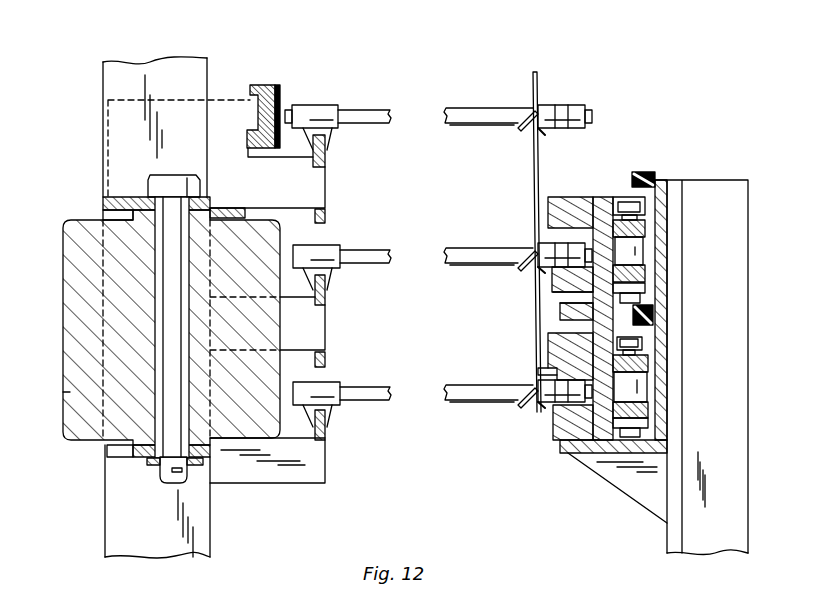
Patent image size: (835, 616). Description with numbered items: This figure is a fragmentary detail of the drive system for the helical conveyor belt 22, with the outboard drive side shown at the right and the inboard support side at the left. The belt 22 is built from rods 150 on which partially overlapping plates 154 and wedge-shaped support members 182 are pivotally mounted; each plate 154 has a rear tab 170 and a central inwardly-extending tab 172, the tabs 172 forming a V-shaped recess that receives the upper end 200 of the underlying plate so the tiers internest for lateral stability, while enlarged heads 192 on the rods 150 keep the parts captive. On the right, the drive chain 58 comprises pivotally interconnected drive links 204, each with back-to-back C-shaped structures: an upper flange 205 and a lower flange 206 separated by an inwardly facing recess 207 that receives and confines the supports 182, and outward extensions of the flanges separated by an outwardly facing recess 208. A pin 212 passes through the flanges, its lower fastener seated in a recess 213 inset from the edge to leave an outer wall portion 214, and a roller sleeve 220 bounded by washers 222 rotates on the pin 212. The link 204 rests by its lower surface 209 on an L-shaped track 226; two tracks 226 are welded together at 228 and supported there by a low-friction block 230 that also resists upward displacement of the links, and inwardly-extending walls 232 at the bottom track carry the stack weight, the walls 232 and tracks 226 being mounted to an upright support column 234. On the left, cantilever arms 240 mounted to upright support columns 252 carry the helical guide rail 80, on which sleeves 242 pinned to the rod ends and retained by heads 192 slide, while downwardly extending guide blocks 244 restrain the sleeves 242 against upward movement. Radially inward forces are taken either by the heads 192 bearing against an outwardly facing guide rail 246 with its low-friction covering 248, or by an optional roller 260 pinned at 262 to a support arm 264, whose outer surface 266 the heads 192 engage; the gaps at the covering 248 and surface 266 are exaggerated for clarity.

The conveyor belt 22 is at (459, 38).
The drive chain 58 is at (671, 126).
The helical guide rail 80 is at (325, 162).
The rods 150 is at (362, 110).
The plates 154 is at (540, 90).
The rear tab portion 170 is at (544, 135).
The intermediate inwardly-extending tab portion 172 is at (515, 128).
The support members 182 is at (547, 105).
The enlarged heads 192 is at (288, 108).
The upper end of underlying plate 200 is at (530, 150).
The drive links 204 is at (583, 205).
The upper flange 205 is at (563, 205).
The lower flange 206 is at (553, 282).
The inwardly facing recess 207 is at (547, 365).
The outwardly facing recess 208 is at (652, 260).
The lower surface of drive link 209 is at (545, 312).
The pin 212 is at (643, 203).
The recess for fastener 213 is at (553, 297).
The outer wall portion 214 is at (652, 297).
The roller sleeve 220 is at (640, 252).
The washers 222 is at (645, 230).
The L-shaped track 226 is at (663, 308).
The weld 228 is at (653, 325).
The block 230 is at (655, 178).
The inwardly-extending walls 232 is at (628, 497).
The upright support column 234 is at (708, 537).
The cantilever arms 240 is at (315, 197).
The sleeves 242 is at (333, 131).
The guide blocks 244 is at (325, 214).
The outwardly facing guide rail 246 is at (258, 118).
The low-friction covering 248 is at (266, 85).
The upright support columns 252 is at (110, 83).
The roller support 260 is at (70, 363).
The pin 262 is at (178, 183).
The support arm 264 is at (103, 203).
The outer surface of roller 266 is at (63, 391).